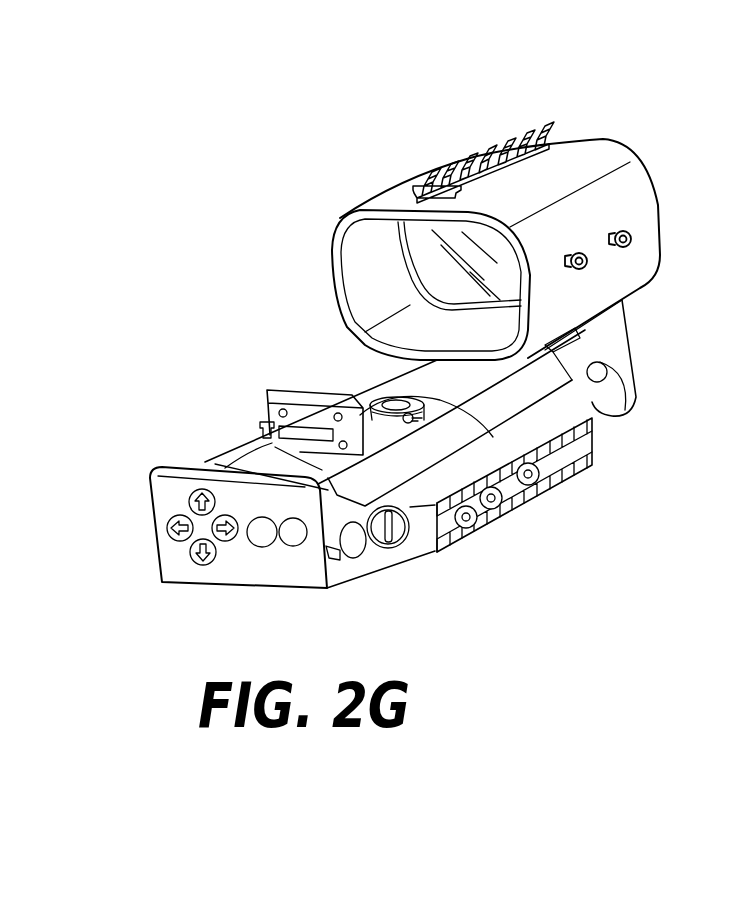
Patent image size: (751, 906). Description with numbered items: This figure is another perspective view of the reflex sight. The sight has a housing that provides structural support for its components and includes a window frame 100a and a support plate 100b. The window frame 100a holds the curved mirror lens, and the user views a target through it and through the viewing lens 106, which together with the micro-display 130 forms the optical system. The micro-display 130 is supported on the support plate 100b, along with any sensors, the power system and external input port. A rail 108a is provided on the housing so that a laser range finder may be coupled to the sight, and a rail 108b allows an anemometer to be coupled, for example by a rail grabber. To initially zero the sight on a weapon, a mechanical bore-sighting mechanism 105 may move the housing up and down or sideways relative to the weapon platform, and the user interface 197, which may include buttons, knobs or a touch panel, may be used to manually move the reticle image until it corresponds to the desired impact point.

The window frame 100a is at (630, 165).
The support plate 100b is at (617, 344).
The mechanical bore-sighting mechanism 105 is at (425, 400).
The viewing lens 106 is at (505, 288).
The rail 108a is at (509, 128).
The rail 108b is at (437, 553).
The micro-display 130 is at (318, 410).
The user interface 197 is at (248, 569).